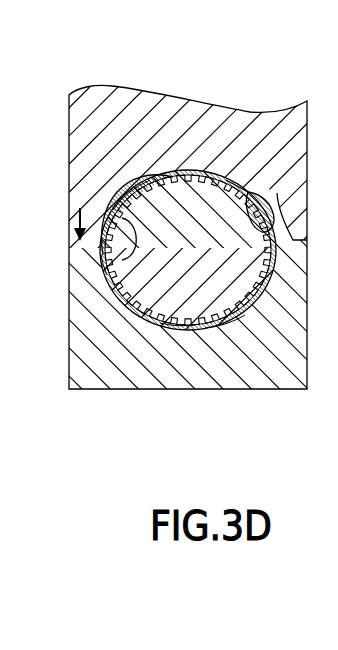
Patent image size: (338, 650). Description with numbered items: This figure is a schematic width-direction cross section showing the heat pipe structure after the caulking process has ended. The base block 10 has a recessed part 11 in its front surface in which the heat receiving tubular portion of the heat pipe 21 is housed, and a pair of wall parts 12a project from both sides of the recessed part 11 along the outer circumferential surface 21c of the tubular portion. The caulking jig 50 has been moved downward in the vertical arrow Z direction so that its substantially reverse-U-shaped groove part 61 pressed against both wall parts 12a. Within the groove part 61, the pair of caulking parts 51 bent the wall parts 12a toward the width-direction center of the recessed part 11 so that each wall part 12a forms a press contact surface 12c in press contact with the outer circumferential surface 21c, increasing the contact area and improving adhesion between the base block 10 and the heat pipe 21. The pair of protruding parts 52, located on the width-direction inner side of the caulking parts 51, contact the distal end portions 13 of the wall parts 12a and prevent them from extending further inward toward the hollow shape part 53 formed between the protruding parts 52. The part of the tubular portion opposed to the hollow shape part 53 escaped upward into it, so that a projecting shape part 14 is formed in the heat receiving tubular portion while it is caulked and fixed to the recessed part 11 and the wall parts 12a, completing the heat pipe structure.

The base block 10 is at (103, 390).
The recessed part 11 is at (175, 330).
The wall part 12a is at (113, 210).
The press contact surface 12c is at (101, 248).
The distal end portion 13 is at (141, 182).
The projecting shape part 14 is at (185, 170).
The heat pipe 21 is at (231, 324).
The outer circumferential surface 21c is at (104, 260).
The caulking jig 50 is at (69, 113).
The caulking part 51 is at (143, 180).
The protruding part 52 is at (217, 197).
The hollow shape part 53 is at (218, 172).
The groove part 61 is at (277, 193).
The arrow Z direction z is at (80, 210).